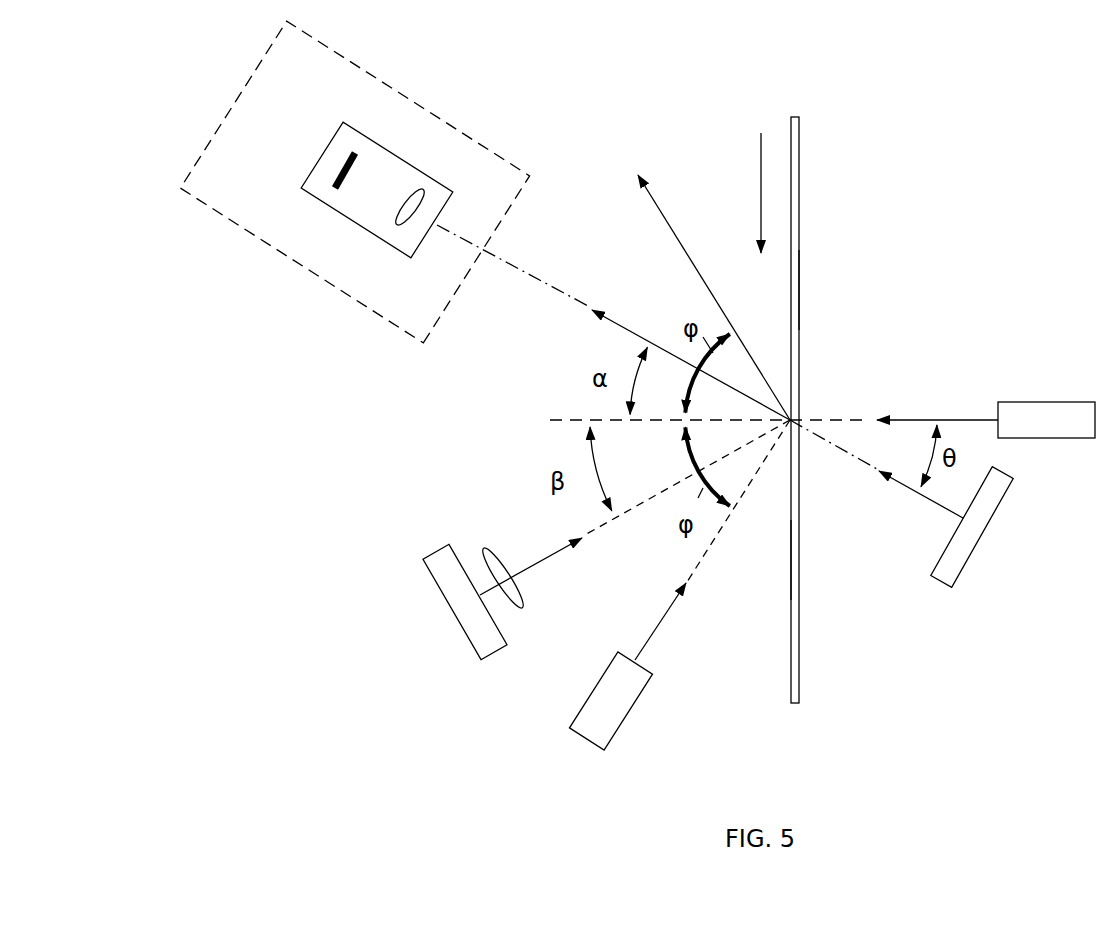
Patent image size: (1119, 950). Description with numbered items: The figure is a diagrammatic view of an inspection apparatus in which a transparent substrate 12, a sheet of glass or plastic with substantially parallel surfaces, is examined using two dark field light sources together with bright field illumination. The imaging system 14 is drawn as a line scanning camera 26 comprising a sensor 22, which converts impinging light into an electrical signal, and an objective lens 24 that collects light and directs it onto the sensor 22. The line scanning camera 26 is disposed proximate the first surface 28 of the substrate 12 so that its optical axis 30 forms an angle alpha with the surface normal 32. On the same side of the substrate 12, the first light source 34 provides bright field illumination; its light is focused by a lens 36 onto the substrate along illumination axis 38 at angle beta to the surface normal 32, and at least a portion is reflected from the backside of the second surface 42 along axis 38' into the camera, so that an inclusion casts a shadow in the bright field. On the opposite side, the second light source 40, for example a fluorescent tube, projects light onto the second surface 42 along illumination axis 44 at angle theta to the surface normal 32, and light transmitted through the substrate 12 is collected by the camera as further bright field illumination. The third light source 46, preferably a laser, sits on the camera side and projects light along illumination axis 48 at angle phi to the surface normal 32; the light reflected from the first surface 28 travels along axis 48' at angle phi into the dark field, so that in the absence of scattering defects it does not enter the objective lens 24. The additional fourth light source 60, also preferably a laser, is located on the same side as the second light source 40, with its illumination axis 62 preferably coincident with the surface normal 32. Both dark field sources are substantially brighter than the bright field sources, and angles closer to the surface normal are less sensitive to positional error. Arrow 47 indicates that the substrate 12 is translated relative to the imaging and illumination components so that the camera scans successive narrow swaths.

The transparent substrate 12 is at (830, 287).
The imaging system 14 is at (262, 254).
The sensor 22 is at (340, 167).
The objective lens 24 is at (393, 218).
The line scanning camera 26 is at (418, 148).
The first surface 28 is at (790, 555).
The optical axis 30 is at (550, 312).
The surface normal 32 is at (835, 420).
The first light source 34 is at (435, 555).
The lens 36 is at (518, 610).
The illumination axis 38 is at (631, 507).
The axis of reflected light 38' is at (679, 332).
The second light source 40 is at (958, 567).
The second surface 42 is at (802, 188).
The illumination axis 44 is at (902, 490).
The third light source 46 is at (622, 725).
The arrow 47 is at (758, 188).
The illumination axis 48 is at (712, 560).
The axis of reflected light 48' is at (714, 280).
The fourth light source 60 is at (1022, 402).
The illumination axis 62 is at (912, 420).